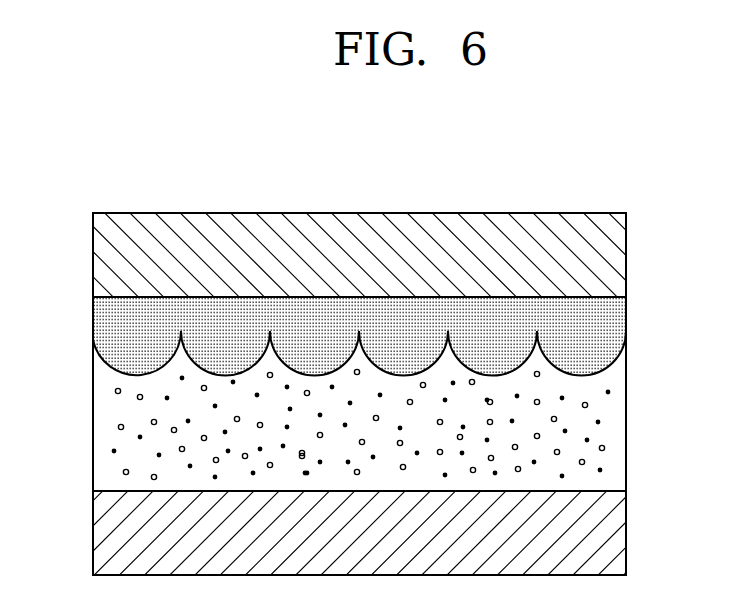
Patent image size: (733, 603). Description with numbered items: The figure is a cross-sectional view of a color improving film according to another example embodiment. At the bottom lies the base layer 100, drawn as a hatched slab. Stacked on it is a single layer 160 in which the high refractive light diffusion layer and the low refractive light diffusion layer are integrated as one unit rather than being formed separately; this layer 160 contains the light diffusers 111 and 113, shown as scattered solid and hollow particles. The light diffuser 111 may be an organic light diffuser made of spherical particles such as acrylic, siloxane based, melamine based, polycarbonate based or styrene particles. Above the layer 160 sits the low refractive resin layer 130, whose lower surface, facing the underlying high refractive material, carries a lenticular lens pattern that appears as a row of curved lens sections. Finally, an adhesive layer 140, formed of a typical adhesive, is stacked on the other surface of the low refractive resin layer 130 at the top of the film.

The base layer 100 is at (612, 535).
The light diffuser 111 is at (112, 451).
The light diffuser 113 is at (118, 427).
The low refractive resin layer 130 is at (612, 317).
The adhesive layer 140 is at (612, 253).
The layer 160 is at (366, 411).